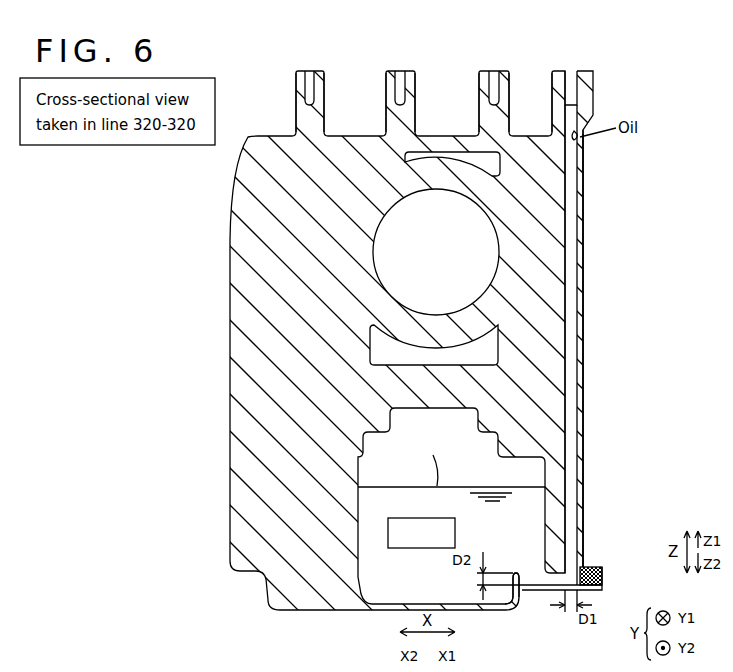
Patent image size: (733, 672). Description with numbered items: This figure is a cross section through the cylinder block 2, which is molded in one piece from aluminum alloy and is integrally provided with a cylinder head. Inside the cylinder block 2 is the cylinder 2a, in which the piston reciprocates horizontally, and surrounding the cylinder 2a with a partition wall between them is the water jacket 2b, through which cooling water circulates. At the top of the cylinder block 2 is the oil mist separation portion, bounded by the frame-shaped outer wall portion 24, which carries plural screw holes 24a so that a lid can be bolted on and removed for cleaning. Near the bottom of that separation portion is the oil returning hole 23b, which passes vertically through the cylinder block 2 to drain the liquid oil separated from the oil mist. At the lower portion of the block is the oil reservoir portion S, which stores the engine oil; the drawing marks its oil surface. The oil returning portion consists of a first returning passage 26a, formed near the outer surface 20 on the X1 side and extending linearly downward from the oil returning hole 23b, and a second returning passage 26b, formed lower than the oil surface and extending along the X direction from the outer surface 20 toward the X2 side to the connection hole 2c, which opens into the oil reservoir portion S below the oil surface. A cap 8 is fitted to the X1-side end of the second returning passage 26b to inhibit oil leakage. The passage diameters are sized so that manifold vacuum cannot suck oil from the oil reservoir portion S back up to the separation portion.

The cylinder block 2 is at (266, 255).
The cylinder 2a is at (497, 226).
The water jacket 2b is at (498, 157).
The connection hole 2c is at (518, 599).
The cap 8 is at (603, 577).
The outer surface 20 is at (585, 430).
The oil returning hole 23b is at (582, 104).
The outer wall portion 24 is at (300, 103).
The screw holes 24a is at (313, 102).
The first returning passage 26a is at (584, 249).
The second returning passage 26b is at (545, 589).
The oil reservoir portion S is at (530, 481).